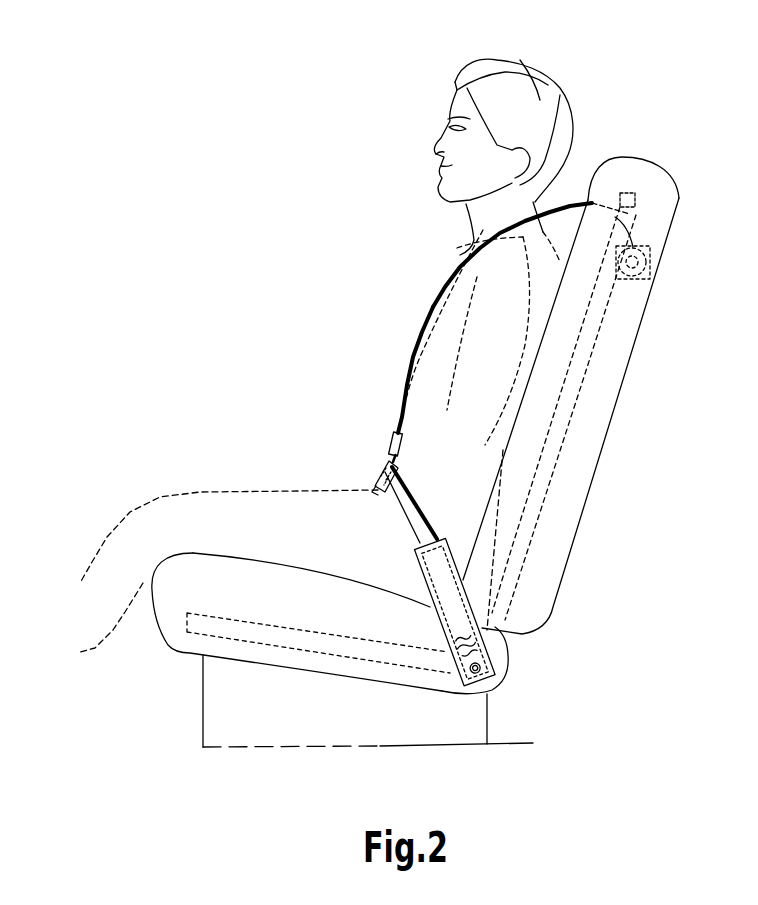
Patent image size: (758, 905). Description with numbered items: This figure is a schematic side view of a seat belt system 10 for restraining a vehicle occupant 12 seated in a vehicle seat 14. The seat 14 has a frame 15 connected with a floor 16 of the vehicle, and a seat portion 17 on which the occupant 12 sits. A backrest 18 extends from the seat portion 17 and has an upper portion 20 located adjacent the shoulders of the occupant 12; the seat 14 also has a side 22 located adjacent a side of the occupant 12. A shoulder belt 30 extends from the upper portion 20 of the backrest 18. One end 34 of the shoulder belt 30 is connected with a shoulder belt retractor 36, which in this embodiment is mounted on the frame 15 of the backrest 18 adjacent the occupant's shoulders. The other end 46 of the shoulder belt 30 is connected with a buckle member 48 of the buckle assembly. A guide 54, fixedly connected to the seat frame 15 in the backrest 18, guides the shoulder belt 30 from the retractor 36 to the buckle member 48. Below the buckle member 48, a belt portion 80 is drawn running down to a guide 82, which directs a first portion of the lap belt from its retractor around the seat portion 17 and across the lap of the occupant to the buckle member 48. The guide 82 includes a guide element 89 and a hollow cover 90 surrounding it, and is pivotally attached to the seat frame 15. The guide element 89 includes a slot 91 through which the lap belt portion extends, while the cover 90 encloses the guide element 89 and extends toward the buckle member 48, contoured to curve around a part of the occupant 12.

The seat belt system 10 is at (338, 122).
The vehicle occupant 12 is at (507, 90).
The vehicle seat 14 is at (594, 472).
The frame 15 is at (565, 395).
The floor 16 is at (512, 743).
The seat portion 17 is at (162, 617).
The backrest 18 is at (598, 379).
The upper portion 20 is at (658, 185).
The side 22 is at (274, 641).
The shoulder belt 30 is at (430, 297).
The end 34 is at (631, 233).
The shoulder belt retractor 36 is at (620, 273).
The end 46 is at (405, 403).
The buckle member 48 is at (390, 436).
The guide 54 is at (628, 205).
The lap belt portion 80 is at (412, 494).
The guide 82 is at (425, 659).
The guide element 89 is at (495, 642).
The cover 90 is at (457, 571).
The slot 91 is at (478, 628).